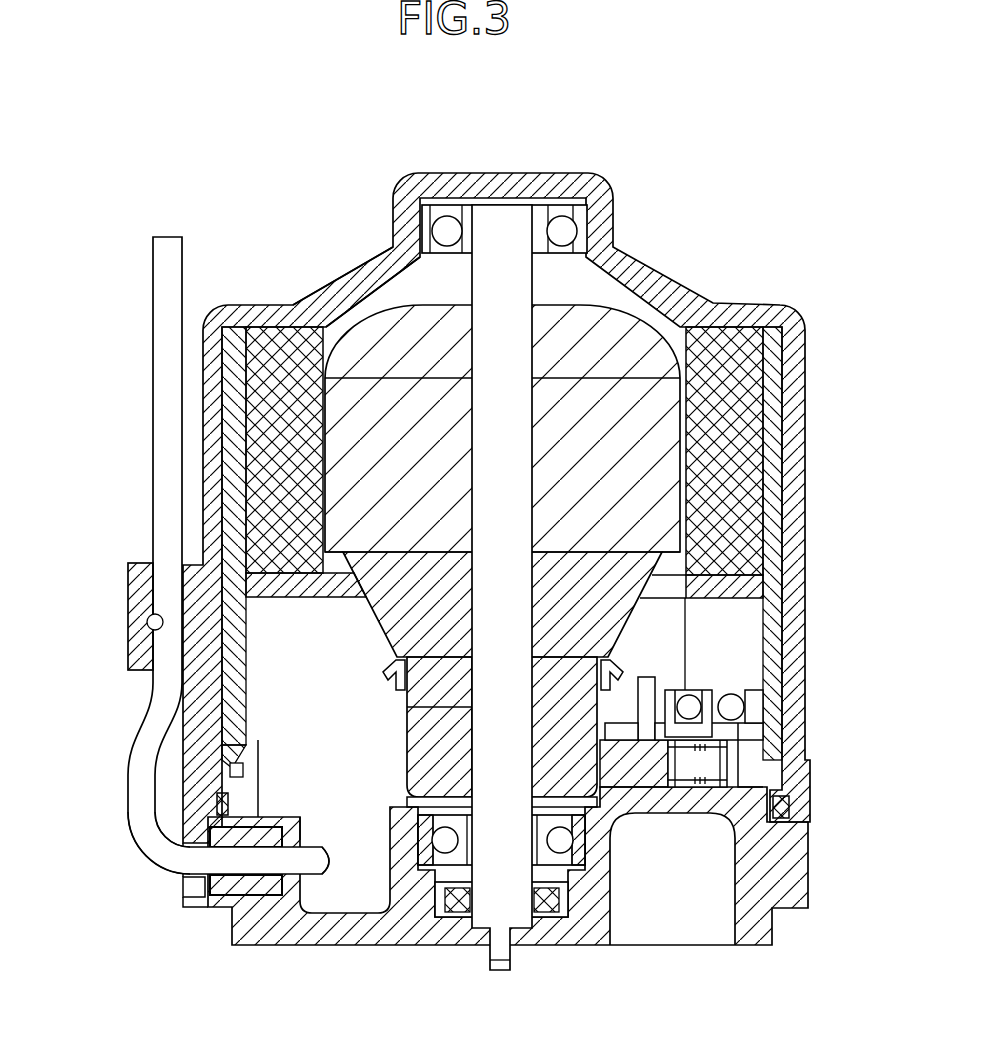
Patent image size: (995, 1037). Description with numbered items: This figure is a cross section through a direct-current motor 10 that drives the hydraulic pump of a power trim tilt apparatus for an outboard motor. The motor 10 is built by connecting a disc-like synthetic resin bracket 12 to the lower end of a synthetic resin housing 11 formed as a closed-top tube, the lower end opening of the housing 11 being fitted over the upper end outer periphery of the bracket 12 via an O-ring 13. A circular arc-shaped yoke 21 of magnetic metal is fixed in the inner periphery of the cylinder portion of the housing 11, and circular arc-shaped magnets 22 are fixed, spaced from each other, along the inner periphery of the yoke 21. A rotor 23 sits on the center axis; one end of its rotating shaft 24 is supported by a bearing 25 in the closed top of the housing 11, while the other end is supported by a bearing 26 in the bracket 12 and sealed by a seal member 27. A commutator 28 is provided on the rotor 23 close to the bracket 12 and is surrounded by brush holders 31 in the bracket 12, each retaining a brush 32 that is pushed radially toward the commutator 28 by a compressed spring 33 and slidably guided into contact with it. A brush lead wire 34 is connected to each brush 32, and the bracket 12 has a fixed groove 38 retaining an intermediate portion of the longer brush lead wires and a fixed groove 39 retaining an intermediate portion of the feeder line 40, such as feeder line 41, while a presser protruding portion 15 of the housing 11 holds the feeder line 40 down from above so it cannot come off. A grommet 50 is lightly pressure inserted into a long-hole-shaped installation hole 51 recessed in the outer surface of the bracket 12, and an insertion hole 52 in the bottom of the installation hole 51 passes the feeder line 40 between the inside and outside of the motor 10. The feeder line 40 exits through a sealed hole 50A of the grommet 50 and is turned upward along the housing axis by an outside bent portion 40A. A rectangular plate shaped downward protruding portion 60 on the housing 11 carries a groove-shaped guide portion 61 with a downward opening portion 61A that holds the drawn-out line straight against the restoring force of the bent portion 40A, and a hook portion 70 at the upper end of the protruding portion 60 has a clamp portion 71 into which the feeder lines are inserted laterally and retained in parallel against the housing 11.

The direct-current motor 10 is at (249, 250).
The housing 11 is at (360, 286).
The bracket 12 is at (350, 935).
The O-ring 13 is at (803, 812).
The presser protruding portion 15 is at (735, 612).
The yoke 21 is at (775, 400).
The magnets 22 is at (735, 435).
The rotor 23 is at (645, 505).
The rotating shaft 24 is at (515, 272).
The bearing 25 is at (560, 232).
The bearing 26 is at (562, 846).
The seal member 27 is at (548, 917).
The commutator 28 is at (417, 728).
The brush holder 31 is at (604, 713).
The brush 32 is at (637, 765).
The spring 33 is at (693, 778).
The brush lead wire 34 is at (683, 688).
The fixed groove 38 is at (697, 683).
The fixed groove 39 is at (777, 692).
The feeder line 40 is at (740, 678).
The outside bent portion 40A is at (219, 557).
The feeder line 41 is at (757, 688).
The grommet 50 is at (258, 896).
The sealed hole 50A is at (305, 870).
The installation hole 51 is at (272, 828).
The insertion hole 52 is at (302, 835).
The downward protruding portion 60 is at (156, 910).
The guide portion 61 is at (190, 858).
The downward opening portion 61A is at (196, 898).
The hook portion 70 is at (126, 578).
The clamp portion 71 is at (151, 622).